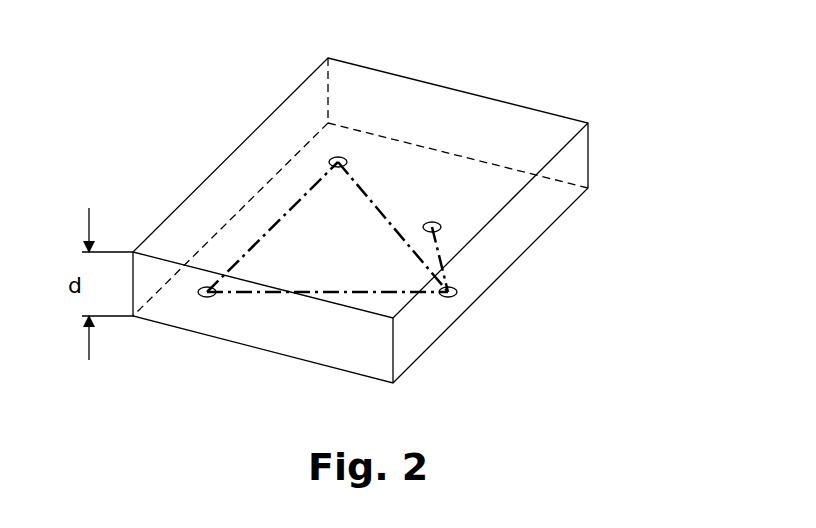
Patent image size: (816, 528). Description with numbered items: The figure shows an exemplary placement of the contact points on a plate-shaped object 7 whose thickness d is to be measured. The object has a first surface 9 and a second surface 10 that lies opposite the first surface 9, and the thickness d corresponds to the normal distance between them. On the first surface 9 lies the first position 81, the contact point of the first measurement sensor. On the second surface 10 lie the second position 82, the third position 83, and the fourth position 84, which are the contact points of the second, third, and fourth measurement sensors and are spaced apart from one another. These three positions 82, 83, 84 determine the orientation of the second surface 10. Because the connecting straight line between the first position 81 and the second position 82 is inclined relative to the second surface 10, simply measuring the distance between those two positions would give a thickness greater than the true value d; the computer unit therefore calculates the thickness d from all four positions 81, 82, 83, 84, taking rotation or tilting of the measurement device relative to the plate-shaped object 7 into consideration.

The plate-shaped object 7 is at (573, 162).
The first surface 9 is at (502, 135).
The second surface 10 is at (519, 268).
The first position 81 is at (432, 211).
The second position 82 is at (435, 308).
The third position 83 is at (215, 309).
The fourth position 84 is at (357, 164).